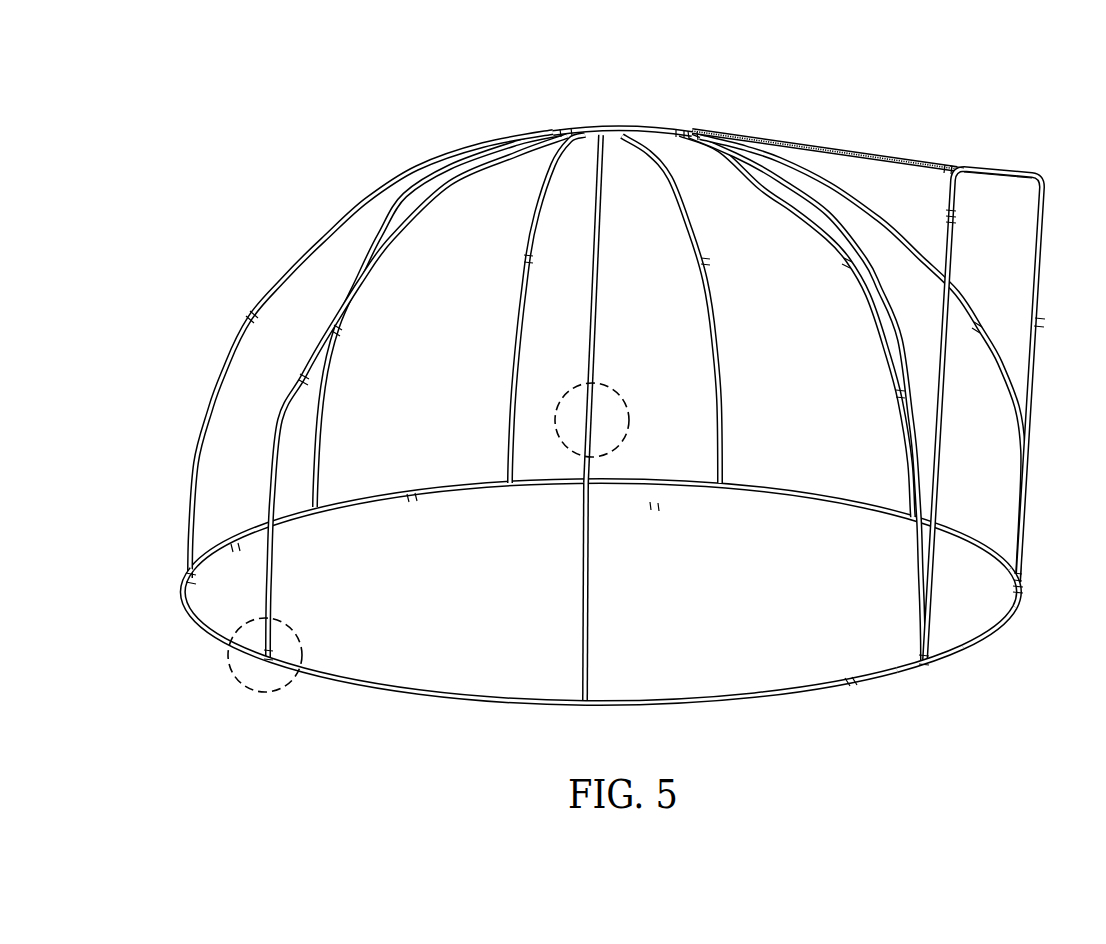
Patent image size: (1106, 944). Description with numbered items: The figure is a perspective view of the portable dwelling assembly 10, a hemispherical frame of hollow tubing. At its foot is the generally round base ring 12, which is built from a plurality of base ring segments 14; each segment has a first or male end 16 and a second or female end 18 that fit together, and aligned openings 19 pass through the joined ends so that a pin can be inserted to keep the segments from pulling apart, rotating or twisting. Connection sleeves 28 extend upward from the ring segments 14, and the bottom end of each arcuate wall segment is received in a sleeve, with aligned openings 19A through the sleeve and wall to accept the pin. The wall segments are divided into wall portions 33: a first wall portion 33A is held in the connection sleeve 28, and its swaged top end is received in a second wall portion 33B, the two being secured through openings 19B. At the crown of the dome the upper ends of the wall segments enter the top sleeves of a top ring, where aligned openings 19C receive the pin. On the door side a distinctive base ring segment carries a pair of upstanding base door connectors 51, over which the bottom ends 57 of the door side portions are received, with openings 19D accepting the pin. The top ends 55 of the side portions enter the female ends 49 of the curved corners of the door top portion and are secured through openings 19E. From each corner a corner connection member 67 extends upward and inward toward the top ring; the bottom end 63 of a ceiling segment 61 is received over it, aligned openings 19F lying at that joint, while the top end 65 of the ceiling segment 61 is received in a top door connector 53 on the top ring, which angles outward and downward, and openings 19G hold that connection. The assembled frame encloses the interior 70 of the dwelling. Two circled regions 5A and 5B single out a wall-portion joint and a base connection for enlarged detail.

The portable dwelling assembly 10 is at (478, 107).
The base ring 12 is at (880, 695).
The base ring segments 14 is at (1006, 627).
The first end 16 is at (1026, 600).
The second end 18 is at (952, 664).
The aligned openings 19 is at (848, 681).
The aligned openings 19A is at (186, 576).
The openings 19B is at (256, 316).
The aligned openings 19C is at (566, 128).
The aligned openings 19D is at (917, 662).
The aligned openings 19E is at (960, 210).
The connector 19F is at (957, 166).
The aligned openings 19G is at (693, 131).
The connection sleeves 28 is at (260, 645).
The wall portions 33 is at (385, 247).
The first wall portion 33A is at (596, 592).
The second wall portion 33B is at (583, 338).
The female ends 49 is at (958, 220).
The base door connectors 51 is at (1022, 591).
The top door connectors 53 is at (660, 127).
The top end of side portion 55 is at (1046, 220).
The bottom end of side portion 57 is at (1022, 577).
The ceiling segments 61 is at (896, 150).
The bottom end of ceiling segment 63 is at (950, 170).
The top end of ceiling segment 65 is at (685, 128).
The corner connection members 67 is at (966, 181).
The interior 70 is at (800, 365).
The detail circle 5A is at (628, 398).
The detail circle 5B is at (300, 630).